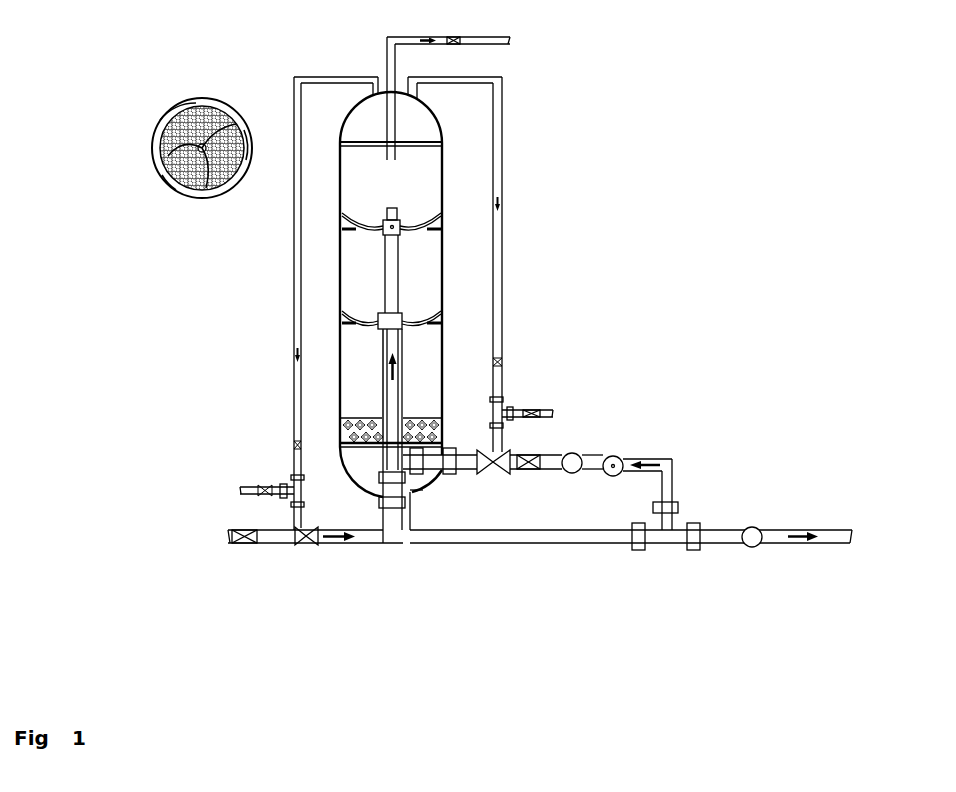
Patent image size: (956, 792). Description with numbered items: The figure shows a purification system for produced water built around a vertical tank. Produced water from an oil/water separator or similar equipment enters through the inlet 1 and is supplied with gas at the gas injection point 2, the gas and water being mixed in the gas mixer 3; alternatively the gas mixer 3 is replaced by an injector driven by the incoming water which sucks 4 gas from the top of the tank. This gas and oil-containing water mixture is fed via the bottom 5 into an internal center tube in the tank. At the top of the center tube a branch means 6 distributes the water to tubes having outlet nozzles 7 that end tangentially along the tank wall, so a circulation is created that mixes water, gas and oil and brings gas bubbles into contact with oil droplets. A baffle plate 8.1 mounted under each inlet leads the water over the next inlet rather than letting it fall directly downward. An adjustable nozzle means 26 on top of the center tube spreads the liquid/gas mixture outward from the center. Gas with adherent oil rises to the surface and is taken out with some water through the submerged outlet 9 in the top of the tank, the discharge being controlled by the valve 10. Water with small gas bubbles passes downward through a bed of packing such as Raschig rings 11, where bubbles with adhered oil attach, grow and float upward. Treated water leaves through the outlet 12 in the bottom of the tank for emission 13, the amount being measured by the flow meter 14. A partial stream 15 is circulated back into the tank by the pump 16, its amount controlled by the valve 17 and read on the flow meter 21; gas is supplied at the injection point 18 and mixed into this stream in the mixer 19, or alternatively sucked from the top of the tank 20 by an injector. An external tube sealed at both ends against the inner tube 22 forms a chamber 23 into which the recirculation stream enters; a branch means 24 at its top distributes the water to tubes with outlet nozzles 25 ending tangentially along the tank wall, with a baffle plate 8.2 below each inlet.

The inlet 1 is at (225, 547).
The gas injection point 2 is at (222, 488).
The gas mixer 3 is at (314, 564).
The gas suction line 4 is at (328, 282).
The bottom 5 is at (386, 537).
The branch means 6 is at (120, 148).
The outlet nozzles 7 is at (120, 172).
The baffle plate 8.1 is at (450, 259).
The baffle plate 8.2 is at (438, 336).
The submerged outlet 9 is at (399, 123).
The valve 10 is at (454, 22).
The Raschig rings 11 is at (338, 417).
The outlet 12 is at (440, 489).
The emission 13 is at (638, 556).
The flow meter 14 is at (754, 558).
The partial stream 15 is at (686, 503).
The pump 16 is at (656, 479).
The valve 17 is at (536, 480).
The injection point 18 is at (563, 398).
The mixer 19 is at (497, 526).
The top of the tank 20 is at (485, 264).
The flow meter 21 is at (582, 479).
The inner tube 22 is at (406, 373).
The chamber 23 is at (379, 383).
The branch means 24 is at (315, 298).
The outlet nozzles 25 is at (339, 312).
The adjustable nozzle means 26 is at (382, 219).